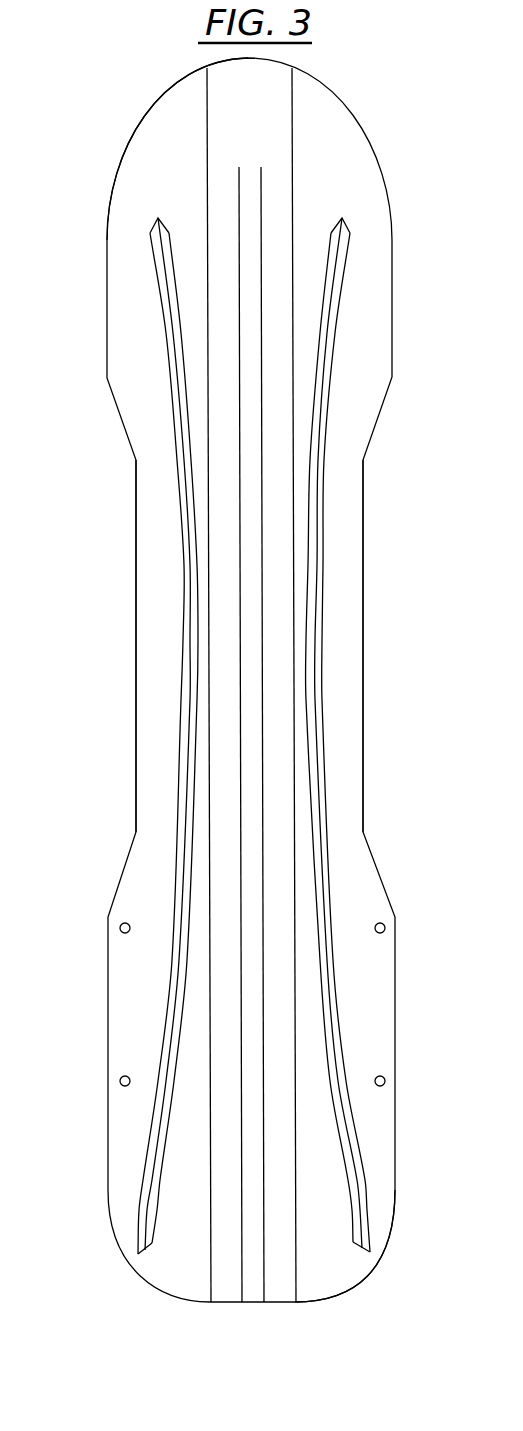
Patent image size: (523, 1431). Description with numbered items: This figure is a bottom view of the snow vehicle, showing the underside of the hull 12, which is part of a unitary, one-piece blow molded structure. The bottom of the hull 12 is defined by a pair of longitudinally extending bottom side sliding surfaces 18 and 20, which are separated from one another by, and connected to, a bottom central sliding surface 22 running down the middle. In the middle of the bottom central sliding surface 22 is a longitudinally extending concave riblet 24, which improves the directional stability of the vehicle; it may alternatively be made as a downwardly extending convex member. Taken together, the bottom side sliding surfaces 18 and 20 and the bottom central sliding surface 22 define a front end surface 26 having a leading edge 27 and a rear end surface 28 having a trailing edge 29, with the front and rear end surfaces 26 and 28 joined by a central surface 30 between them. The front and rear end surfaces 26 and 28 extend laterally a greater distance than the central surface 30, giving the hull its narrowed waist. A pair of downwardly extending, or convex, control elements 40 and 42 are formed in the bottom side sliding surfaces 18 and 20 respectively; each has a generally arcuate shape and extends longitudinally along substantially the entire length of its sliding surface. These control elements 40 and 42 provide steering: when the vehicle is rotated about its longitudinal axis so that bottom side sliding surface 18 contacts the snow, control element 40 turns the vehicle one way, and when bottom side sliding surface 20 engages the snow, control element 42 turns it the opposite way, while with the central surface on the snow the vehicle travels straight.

The hull 12 is at (241, 691).
The bottom side sliding surface 18 is at (372, 362).
The bottom side sliding surface 20 is at (125, 317).
The bottom central sliding surface 22 is at (277, 98).
The concave riblet 24 is at (255, 1295).
The front end surface 26 is at (150, 103).
The leading edge 27 is at (197, 69).
The rear end surface 28 is at (96, 1238).
The trailing edge 29 is at (310, 1303).
The central surface 30 is at (115, 678).
The control element 40 is at (317, 566).
The control element 42 is at (185, 566).